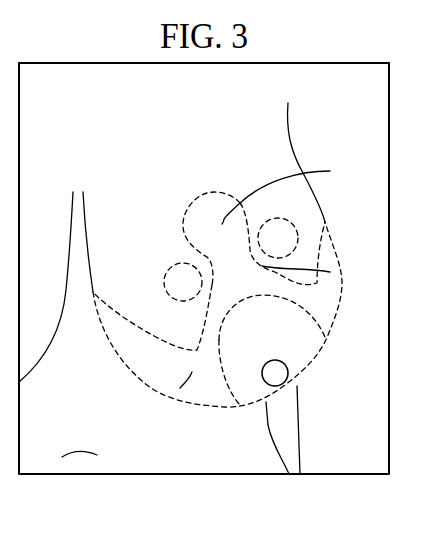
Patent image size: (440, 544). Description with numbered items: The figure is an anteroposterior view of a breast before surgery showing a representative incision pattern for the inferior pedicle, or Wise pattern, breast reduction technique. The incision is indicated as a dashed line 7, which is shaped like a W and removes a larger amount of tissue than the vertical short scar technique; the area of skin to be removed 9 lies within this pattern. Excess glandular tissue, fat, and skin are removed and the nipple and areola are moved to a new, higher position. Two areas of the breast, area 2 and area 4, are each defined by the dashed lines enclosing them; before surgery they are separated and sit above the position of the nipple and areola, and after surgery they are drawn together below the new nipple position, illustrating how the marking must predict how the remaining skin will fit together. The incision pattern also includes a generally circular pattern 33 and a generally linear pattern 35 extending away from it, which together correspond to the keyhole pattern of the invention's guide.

The dashed line 7 is at (200, 197).
The generally circular pattern 33 is at (289, 191).
The area 4 is at (270, 250).
The area 2 is at (175, 294).
The generally linear pattern 35 is at (330, 272).
The area of skin to be removed 9 is at (180, 388).